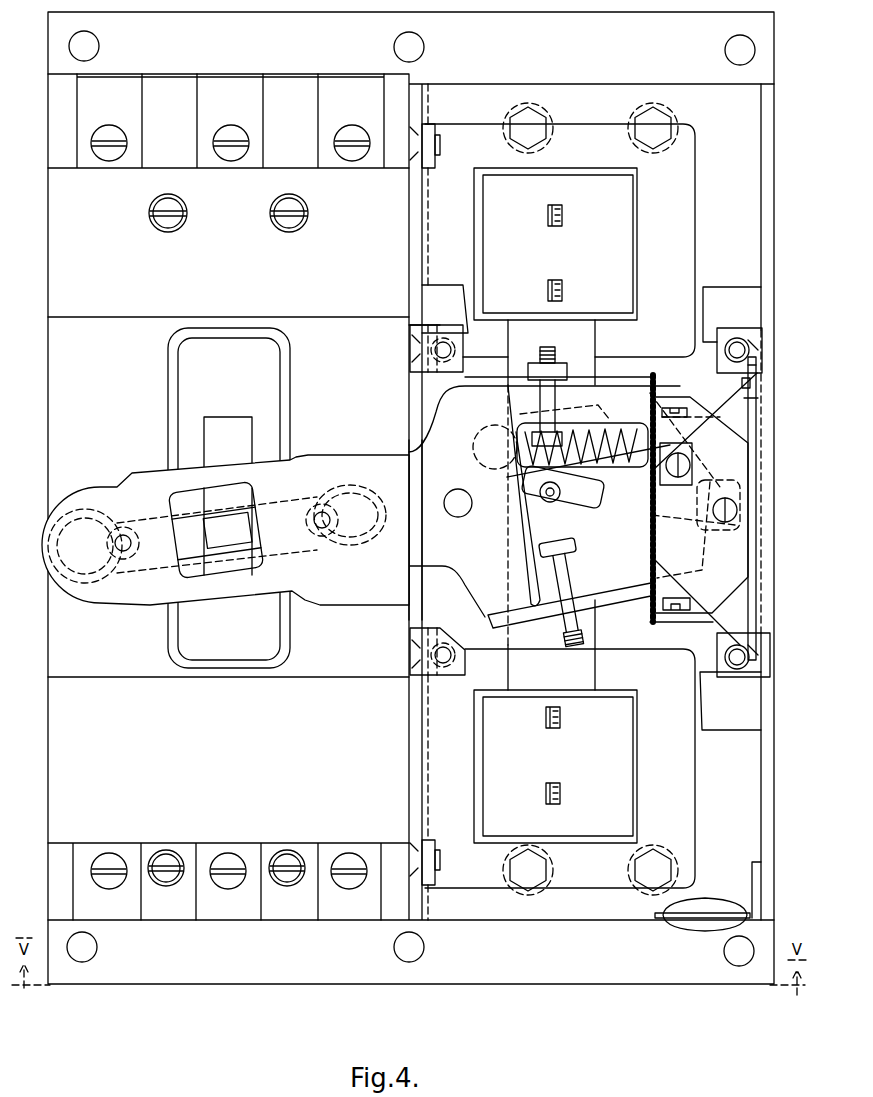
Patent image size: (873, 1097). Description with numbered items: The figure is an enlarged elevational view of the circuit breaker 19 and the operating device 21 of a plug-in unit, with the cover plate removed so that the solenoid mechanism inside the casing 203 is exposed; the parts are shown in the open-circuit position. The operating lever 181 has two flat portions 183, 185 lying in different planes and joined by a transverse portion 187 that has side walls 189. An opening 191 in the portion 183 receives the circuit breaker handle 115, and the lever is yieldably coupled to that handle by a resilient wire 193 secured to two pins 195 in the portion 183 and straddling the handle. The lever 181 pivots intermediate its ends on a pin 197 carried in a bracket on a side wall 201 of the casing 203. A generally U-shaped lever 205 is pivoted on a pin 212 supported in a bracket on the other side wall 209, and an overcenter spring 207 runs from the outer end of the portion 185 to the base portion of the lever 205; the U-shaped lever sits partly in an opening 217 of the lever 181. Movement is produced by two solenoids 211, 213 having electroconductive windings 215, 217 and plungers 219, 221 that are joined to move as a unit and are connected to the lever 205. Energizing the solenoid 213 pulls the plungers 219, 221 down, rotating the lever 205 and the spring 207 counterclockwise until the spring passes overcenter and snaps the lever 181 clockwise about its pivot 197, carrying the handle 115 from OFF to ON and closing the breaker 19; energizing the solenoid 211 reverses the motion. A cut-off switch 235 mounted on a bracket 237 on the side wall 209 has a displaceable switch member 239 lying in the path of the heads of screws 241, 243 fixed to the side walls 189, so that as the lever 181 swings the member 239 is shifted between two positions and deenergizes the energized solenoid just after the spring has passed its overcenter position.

The circuit breaker 19 is at (216, 272).
The operating device 21 is at (714, 210).
The circuit breaker handle 115 is at (242, 530).
The operating lever 181 is at (398, 497).
The flat portion 183 is at (155, 480).
The flat portion 185 is at (569, 605).
The transverse portion 187 is at (515, 592).
The side walls 189 is at (526, 390).
The opening 191 is at (190, 497).
The resilient wire 193 is at (190, 565).
The pins 195 is at (122, 530).
The pin 197 is at (452, 514).
The side wall 201 is at (413, 614).
The casing 203 is at (764, 406).
The U-shaped lever 205 is at (707, 460).
The overcenter spring 207 is at (613, 440).
The side wall 209 is at (762, 465).
The solenoid 211 is at (536, 263).
The pin 212 is at (735, 523).
The solenoid 213 is at (538, 763).
The electroconductive winding 215 is at (683, 263).
The electroconductive winding 217 is at (645, 387).
The plunger 219 is at (585, 340).
The plunger 221 is at (592, 682).
The cut-off switch 235 is at (665, 553).
The bracket 237 is at (620, 607).
The switch member 239 is at (583, 512).
The screw 241 is at (545, 394).
The screw 243 is at (580, 640).